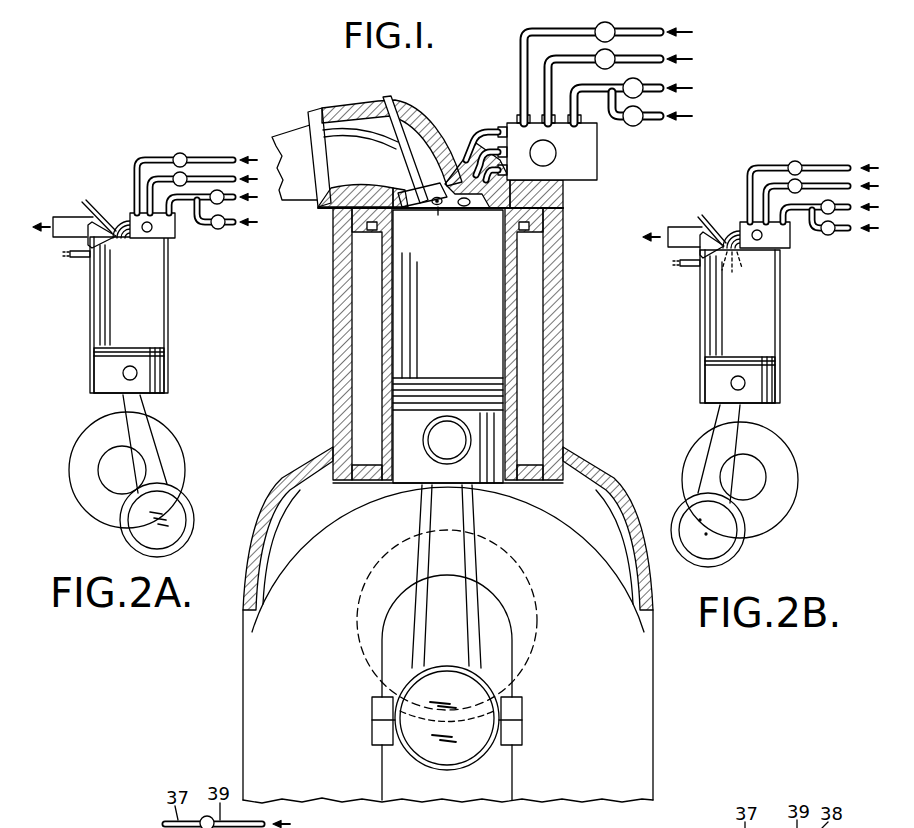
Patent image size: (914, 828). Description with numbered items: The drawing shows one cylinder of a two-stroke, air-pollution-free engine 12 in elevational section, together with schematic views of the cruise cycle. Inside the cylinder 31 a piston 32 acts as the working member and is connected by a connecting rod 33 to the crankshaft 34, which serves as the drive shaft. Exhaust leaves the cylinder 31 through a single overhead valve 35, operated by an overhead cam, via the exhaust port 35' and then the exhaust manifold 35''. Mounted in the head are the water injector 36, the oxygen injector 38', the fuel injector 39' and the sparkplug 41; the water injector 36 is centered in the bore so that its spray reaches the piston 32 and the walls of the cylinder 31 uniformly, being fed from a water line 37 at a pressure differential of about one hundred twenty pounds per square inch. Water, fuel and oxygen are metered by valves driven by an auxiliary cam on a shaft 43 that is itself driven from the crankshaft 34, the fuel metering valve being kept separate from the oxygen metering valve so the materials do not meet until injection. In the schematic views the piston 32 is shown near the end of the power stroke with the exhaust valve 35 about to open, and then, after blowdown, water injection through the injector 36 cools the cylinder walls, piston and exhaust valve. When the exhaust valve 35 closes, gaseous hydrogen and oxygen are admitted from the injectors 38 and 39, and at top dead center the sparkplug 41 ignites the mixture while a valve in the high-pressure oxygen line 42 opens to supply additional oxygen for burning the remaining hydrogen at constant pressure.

In FIG. 1, the engine 12 is at (272, 505).
In FIG. 1, the cylinder 31 is at (517, 328).
In FIG. 2A, the cylinder 31 is at (169, 304).
In FIG. 2B, the cylinder 31 is at (781, 305).
In FIG. 1, the piston 32 is at (470, 420).
In FIG. 2A, the piston 32 is at (168, 372).
In FIG. 2B, the piston 32 is at (781, 380).
In FIG. 1, the connecting rod 33 is at (453, 519).
In FIG. 2A, the connecting rod 33 is at (145, 427).
In FIG. 2B, the connecting rod 33 is at (722, 445).
In FIG. 1, the crankshaft 34 is at (537, 622).
In FIG. 2A, the crankshaft 34 is at (107, 482).
In FIG. 2B, the crankshaft 34 is at (757, 475).
In FIG. 1, the overhead valve 35 is at (415, 174).
In FIG. 2A, the overhead valve 35 is at (101, 209).
In FIG. 2B, the overhead valve 35 is at (714, 220).
In FIG. 1, the exhaust port 35' is at (374, 169).
In FIG. 1, the exhaust manifold 35'' is at (289, 144).
In FIG. 2A, the exhaust manifold 35'' is at (63, 210).
In FIG. 2B, the exhaust manifold 35'' is at (672, 220).
In FIG. 1, the water injector 36 is at (447, 205).
In FIG. 2A, the water injector 36 is at (118, 239).
In FIG. 2B, the water injector 36 is at (735, 240).
In FIG. 1, the water line 37 is at (520, 57).
In FIG. 2A, the water line 37 is at (140, 158).
In FIG. 2B, the water line 37 is at (751, 167).
In FIG. 1, the injector 38 is at (600, 120).
In FIG. 2A, the injector 38 is at (213, 168).
In FIG. 2B, the injector 38 is at (830, 178).
In FIG. 1, the oxygen injector 38' is at (529, 177).
In FIG. 1, the injector 39 is at (561, 87).
In FIG. 2A, the injector 39 is at (203, 168).
In FIG. 2B, the injector 39 is at (822, 178).
In FIG. 1, the fuel injector 39' is at (479, 233).
In FIG. 1, the sparkplug 41 is at (438, 210).
In FIG. 2A, the sparkplug 41 is at (89, 254).
In FIG. 2B, the sparkplug 41 is at (698, 263).
In FIG. 1, the high-pressure oxygen line 42 is at (645, 121).
In FIG. 2A, the high-pressure oxygen line 42 is at (231, 229).
In FIG. 2B, the high-pressure oxygen line 42 is at (834, 234).
In FIG. 1, the shaft 43 is at (550, 157).
In FIG. 2A, the shaft 43 is at (153, 229).
In FIG. 2B, the shaft 43 is at (762, 238).